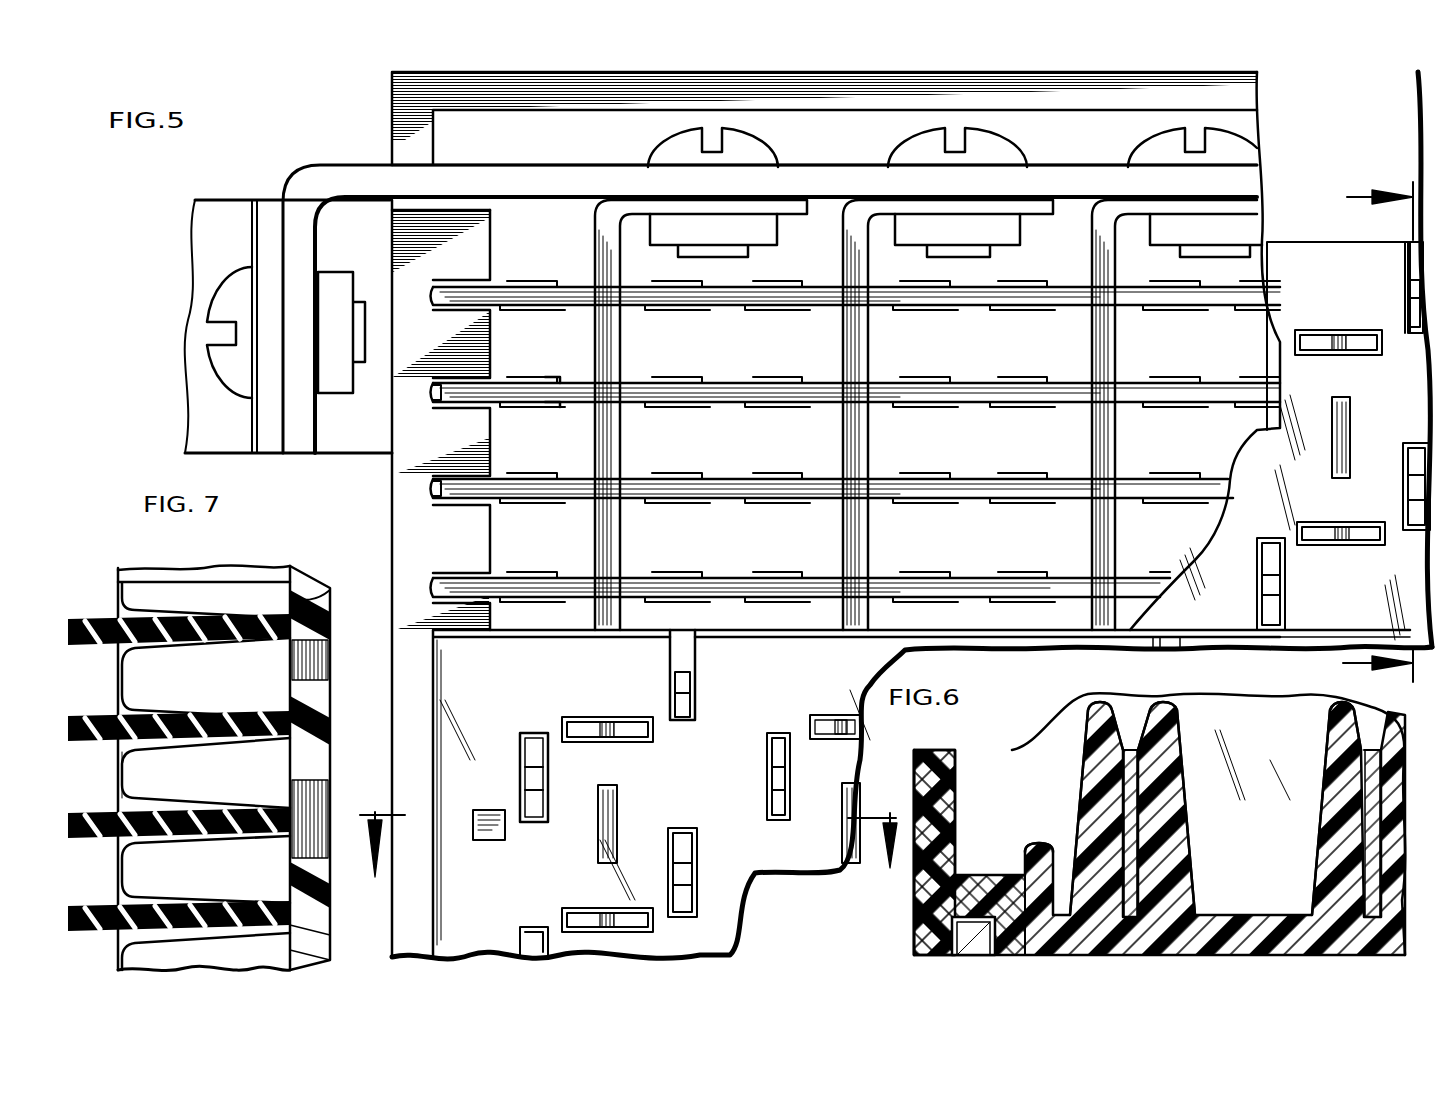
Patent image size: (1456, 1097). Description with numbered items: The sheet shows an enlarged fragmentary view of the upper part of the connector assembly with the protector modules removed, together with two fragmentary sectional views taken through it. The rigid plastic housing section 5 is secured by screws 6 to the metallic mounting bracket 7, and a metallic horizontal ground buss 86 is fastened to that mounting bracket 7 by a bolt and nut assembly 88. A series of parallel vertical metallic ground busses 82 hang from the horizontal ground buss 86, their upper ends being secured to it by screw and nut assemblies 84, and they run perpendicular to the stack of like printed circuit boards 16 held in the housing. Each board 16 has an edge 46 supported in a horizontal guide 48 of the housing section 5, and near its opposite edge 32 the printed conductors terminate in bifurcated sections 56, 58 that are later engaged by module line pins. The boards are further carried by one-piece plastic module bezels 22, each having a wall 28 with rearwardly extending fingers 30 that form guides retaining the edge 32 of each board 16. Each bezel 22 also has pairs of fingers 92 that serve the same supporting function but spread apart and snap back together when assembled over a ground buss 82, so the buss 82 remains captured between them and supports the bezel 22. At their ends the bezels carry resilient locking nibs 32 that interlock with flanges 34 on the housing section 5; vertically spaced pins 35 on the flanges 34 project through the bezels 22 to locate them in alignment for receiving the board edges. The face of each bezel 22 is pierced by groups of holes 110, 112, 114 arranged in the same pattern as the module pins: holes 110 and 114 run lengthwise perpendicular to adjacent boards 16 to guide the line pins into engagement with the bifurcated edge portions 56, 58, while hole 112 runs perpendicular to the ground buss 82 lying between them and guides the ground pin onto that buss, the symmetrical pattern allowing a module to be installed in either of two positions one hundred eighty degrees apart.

In FIG. 5, the housing section 5 is at (392, 538).
In FIG. 6, the housing section 5 is at (914, 885).
In FIG. 5, the screws 6 is at (628, 833).
In FIG. 5, the mounting bracket 7 is at (207, 200).
In FIG. 5, the printed circuit boards 16 is at (980, 392).
In FIG. 7, the printed circuit boards 16 is at (72, 630).
In FIG. 5, the module bezels 22 is at (800, 873).
In FIG. 6, the module bezels 22 is at (1262, 935).
In FIG. 7, the module bezels 22 is at (328, 893).
In FIG. 6, the wall 28 is at (1156, 946).
In FIG. 7, the wall 28 is at (328, 940).
In FIG. 7, the fingers 30 is at (245, 583).
In FIG. 6, the edge 32 is at (1030, 843).
In FIG. 7, the edge 32 is at (328, 605).
In FIG. 6, the flanges 34 is at (980, 875).
In FIG. 5, the pins 35 is at (498, 826).
In FIG. 6, the pins 35 is at (1008, 948).
In FIG. 5, the edge 46 is at (433, 400).
In FIG. 5, the horizontal guides 48 is at (470, 505).
In FIG. 5, the bifurcated section 56 is at (550, 380).
In FIG. 5, the bifurcated section 58 is at (526, 403).
In FIG. 5, the vertical ground busses 82 is at (1080, 348).
In FIG. 6, the vertical ground busses 82 is at (1140, 798).
In FIG. 7, the vertical ground busses 82 is at (138, 568).
In FIG. 5, the screw and nut assemblies 84 is at (776, 158).
In FIG. 5, the horizontal ground buss 86 is at (546, 165).
In FIG. 5, the bolt and nut assembly 88 is at (238, 385).
In FIG. 6, the fingers 92 is at (1082, 752).
In FIG. 7, the fingers 92 is at (75, 772).
In FIG. 5, the hole 110 is at (1410, 268).
In FIG. 7, the hole 110 is at (318, 658).
In FIG. 5, the hole 112 is at (1368, 355).
In FIG. 5, the hole 114 is at (1268, 430).